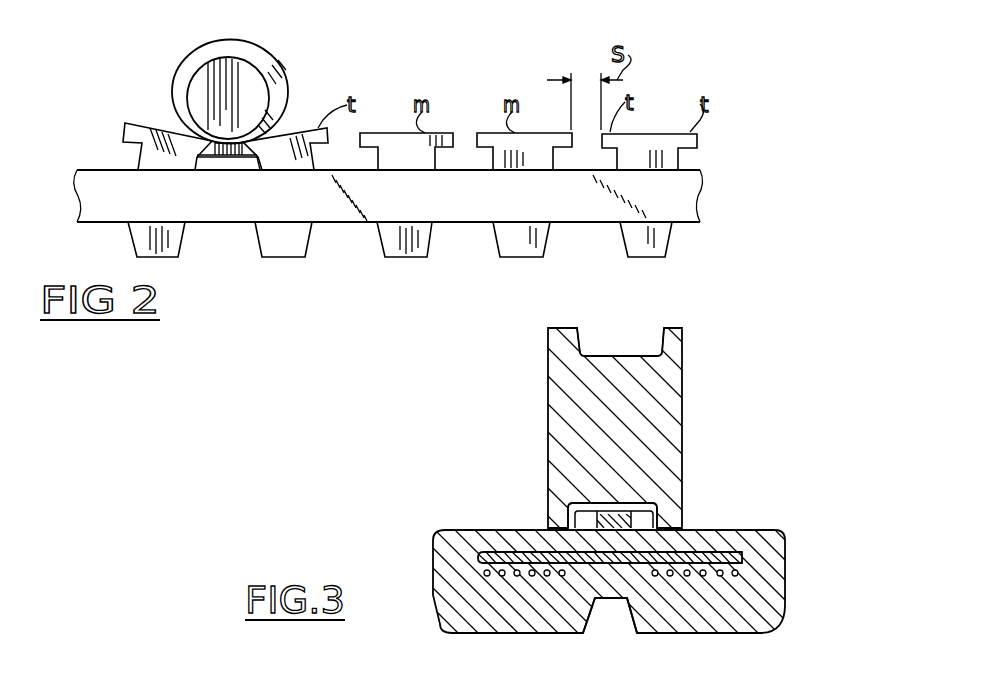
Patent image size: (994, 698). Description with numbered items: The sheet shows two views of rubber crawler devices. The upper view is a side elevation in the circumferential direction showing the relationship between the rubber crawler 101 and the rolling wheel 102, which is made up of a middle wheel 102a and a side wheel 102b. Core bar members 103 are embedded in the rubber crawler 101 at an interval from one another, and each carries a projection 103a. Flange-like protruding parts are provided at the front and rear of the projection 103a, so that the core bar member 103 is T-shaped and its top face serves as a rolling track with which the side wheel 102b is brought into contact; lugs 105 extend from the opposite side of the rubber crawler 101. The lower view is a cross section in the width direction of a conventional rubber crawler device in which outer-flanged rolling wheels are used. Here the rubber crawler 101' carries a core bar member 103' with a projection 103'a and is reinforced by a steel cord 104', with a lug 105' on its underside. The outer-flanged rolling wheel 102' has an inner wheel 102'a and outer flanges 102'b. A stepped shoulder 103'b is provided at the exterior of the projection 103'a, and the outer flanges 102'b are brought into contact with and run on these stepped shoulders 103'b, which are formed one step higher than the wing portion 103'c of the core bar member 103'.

In FIG. 2, the rubber crawler 101 is at (418, 194).
In FIG. 2, the rolling wheel 102 is at (247, 85).
In FIG. 2, the middle wheel 102a is at (255, 52).
In FIG. 2, the side wheel 102b is at (243, 85).
In FIG. 2, the core bar member 103 is at (562, 146).
In FIG. 3, the core bar member 103 is at (602, 520).
In FIG. 2, the projection 103a is at (660, 132).
In FIG. 2, the lug 105 is at (439, 244).
In FIG. 3, the rubber crawler 101' is at (649, 581).
In FIG. 3, the outer-flanged rolling wheel 102' is at (647, 410).
In FIG. 3, the inner wheel 102'a is at (631, 324).
In FIG. 3, the outer flanges 102'b is at (632, 323).
In FIG. 3, the core bar member 103' is at (684, 562).
In FIG. 3, the projection 103'a is at (626, 481).
In FIG. 3, the stepped shoulder 103'b is at (690, 502).
In FIG. 3, the wing portion 103'c is at (776, 520).
In FIG. 3, the steel cord 104' is at (550, 588).
In FIG. 3, the lug 105' is at (568, 636).